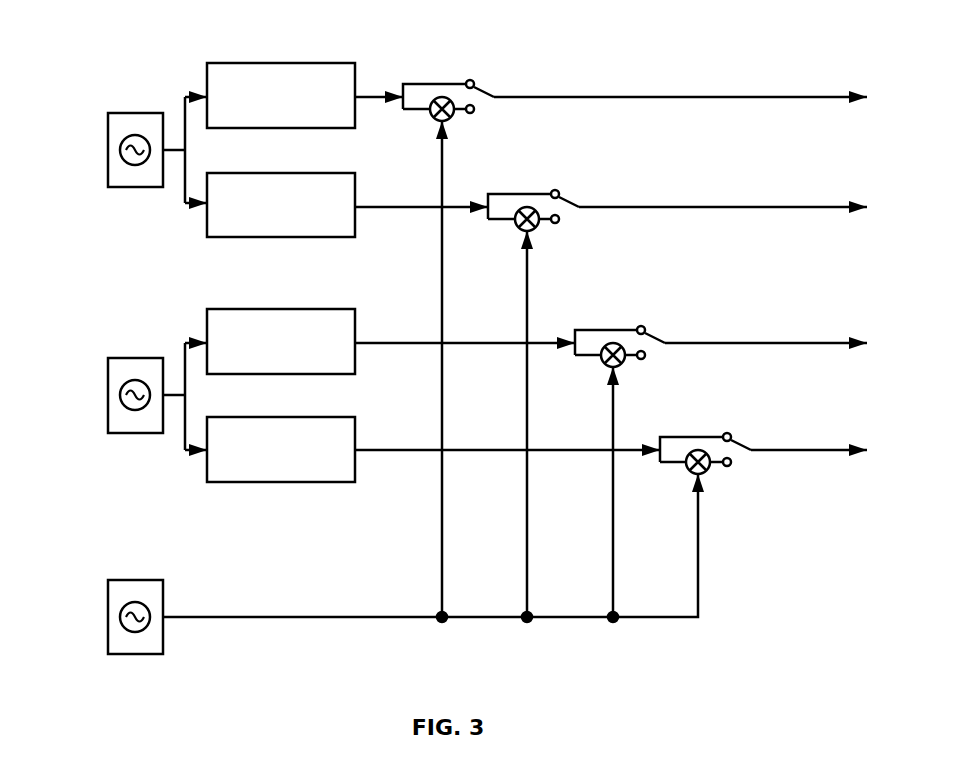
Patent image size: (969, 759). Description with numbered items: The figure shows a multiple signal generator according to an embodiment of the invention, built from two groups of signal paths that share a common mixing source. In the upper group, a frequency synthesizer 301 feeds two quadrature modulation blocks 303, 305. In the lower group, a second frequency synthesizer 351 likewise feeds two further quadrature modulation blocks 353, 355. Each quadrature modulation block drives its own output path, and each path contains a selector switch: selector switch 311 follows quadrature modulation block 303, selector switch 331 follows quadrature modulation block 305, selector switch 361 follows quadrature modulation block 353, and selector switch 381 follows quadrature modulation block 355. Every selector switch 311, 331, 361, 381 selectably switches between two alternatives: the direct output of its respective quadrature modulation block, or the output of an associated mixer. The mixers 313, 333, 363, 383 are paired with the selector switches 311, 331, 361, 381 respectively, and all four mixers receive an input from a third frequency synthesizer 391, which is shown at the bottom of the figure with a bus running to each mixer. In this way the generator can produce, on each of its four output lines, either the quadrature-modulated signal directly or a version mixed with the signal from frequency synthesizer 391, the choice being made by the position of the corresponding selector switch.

The frequency synthesizer 301 is at (108, 170).
The quadrature modulation block 303 is at (282, 63).
The quadrature modulation block 305 is at (282, 173).
The selector switch 311 is at (430, 58).
The mixer 313 is at (451, 118).
The selector switch 331 is at (508, 168).
The mixer 333 is at (536, 228).
The frequency synthesizer 351 is at (108, 415).
The quadrature modulation block 353 is at (282, 309).
The quadrature modulation block 355 is at (282, 417).
The selector switch 361 is at (598, 304).
The mixer 363 is at (622, 364).
The selector switch 381 is at (681, 411).
The mixer 383 is at (707, 471).
The frequency synthesizer 391 is at (108, 617).